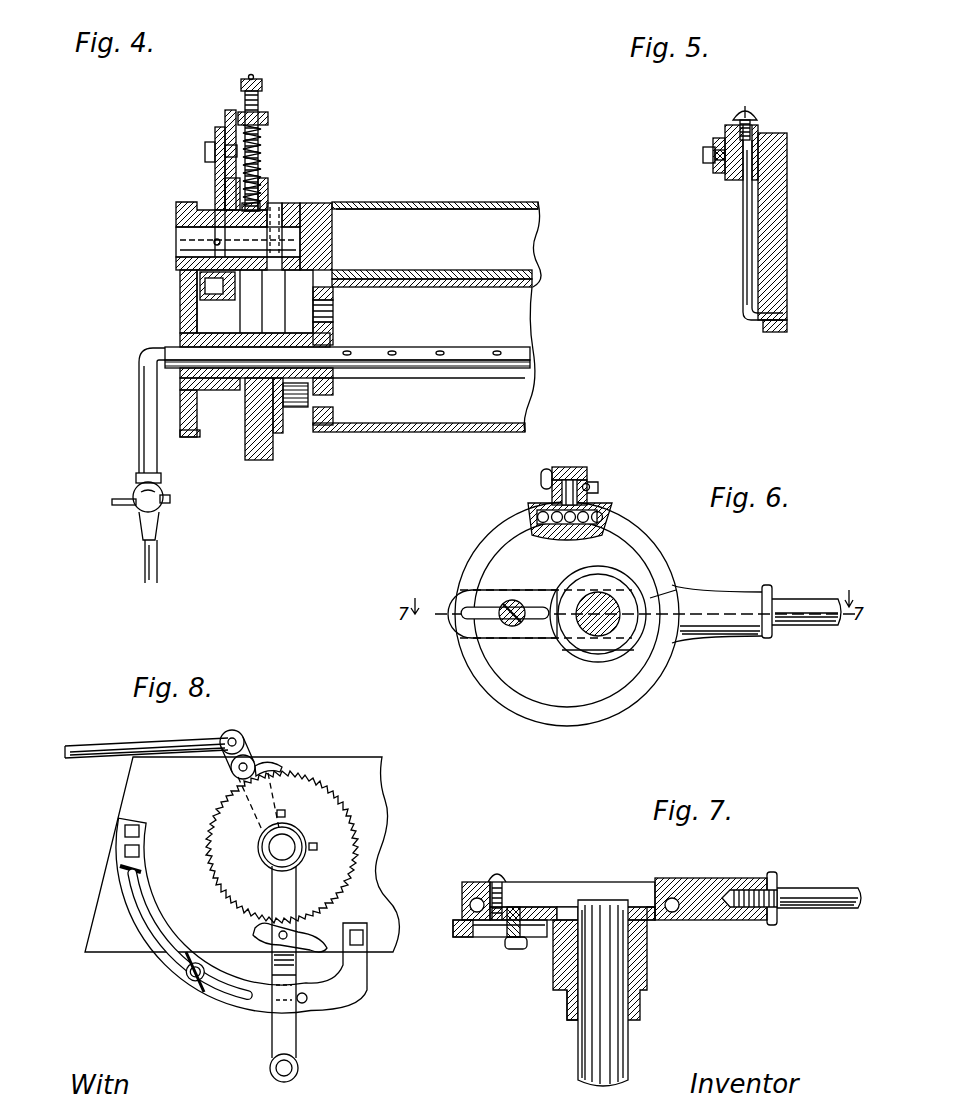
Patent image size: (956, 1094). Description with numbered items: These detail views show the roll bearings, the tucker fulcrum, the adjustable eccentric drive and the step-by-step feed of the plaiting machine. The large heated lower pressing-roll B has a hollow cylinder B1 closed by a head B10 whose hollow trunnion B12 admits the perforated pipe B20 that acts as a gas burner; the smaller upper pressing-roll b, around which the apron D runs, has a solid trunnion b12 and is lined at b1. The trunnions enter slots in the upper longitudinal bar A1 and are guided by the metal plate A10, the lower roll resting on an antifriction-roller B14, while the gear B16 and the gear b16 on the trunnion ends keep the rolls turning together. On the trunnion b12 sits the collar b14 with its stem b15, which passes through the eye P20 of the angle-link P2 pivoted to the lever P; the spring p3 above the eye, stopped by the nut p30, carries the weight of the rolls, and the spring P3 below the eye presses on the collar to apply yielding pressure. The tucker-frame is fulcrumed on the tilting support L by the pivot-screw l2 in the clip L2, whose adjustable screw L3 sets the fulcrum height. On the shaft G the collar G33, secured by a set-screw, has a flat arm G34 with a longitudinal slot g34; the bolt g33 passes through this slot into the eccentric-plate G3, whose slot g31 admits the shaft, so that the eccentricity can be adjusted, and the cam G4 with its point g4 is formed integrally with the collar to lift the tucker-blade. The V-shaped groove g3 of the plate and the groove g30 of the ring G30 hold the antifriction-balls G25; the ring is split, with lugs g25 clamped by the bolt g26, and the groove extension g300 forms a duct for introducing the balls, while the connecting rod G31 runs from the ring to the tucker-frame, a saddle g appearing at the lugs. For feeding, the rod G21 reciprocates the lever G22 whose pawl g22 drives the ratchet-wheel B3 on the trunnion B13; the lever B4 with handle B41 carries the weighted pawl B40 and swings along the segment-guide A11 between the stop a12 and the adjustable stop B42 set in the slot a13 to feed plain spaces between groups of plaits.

In FIG. 4, the stem b15 is at (252, 75).
In FIG. 4, the nut p30 is at (264, 82).
In FIG. 4, the spring p3 is at (263, 100).
In FIG. 4, the eye P20 is at (268, 116).
In FIG. 4, the spring P3 is at (262, 148).
In FIG. 4, the angle-link P2 is at (225, 118).
In FIG. 4, the lever P is at (214, 172).
In FIG. 4, the gear b16 is at (177, 213).
In FIG. 4, the collar b14 is at (276, 216).
In FIG. 4, the trunnion b12 is at (302, 215).
In FIG. 4, the apron D is at (498, 202).
In FIG. 4, the upper pressing-roll b is at (445, 191).
In FIG. 4, the drum lining b1 is at (540, 206).
In FIG. 4, the metal plate A10 is at (333, 307).
In FIG. 4, the head B10 is at (333, 330).
In FIG. 4, the perforated pipe B20 is at (467, 361).
In FIG. 4, the gear B16 is at (180, 305).
In FIG. 4, the trunnion B12 is at (180, 340).
In FIG. 4, the lower pressing-roll B is at (357, 373).
In FIG. 4, the hollow cylinder B1 is at (457, 432).
In FIG. 4, the upper longitudinal bar A1 is at (257, 460).
In FIG. 5, the upper longitudinal bar A1 is at (780, 230).
In FIG. 8, the upper longitudinal bar A1 is at (373, 770).
In FIG. 4, the antifriction-roller B14 is at (298, 407).
In FIG. 5, the adjustable screw L3 is at (750, 108).
In FIG. 5, the clip L2 is at (727, 130).
In FIG. 5, the pivot-screw l2 is at (707, 160).
In FIG. 5, the tilting support L is at (745, 238).
In FIG. 6, the eccentric-plate G3 is at (638, 663).
In FIG. 7, the eccentric-plate G3 is at (662, 920).
In FIG. 6, the collar G33 is at (600, 640).
In FIG. 7, the collar G33 is at (570, 1017).
In FIG. 6, the point of the cam g4 is at (562, 648).
In FIG. 6, the bolt g33 is at (512, 627).
In FIG. 7, the bolt g33 is at (517, 907).
In FIG. 6, the cam G4 is at (567, 582).
In FIG. 7, the cam G4 is at (555, 980).
In FIG. 6, the longitudinal slot g34 is at (487, 617).
In FIG. 7, the longitudinal slot g34 is at (490, 937).
In FIG. 6, the flat arm G34 is at (497, 632).
In FIG. 7, the flat arm G34 is at (465, 937).
In FIG. 6, the ring G30 is at (668, 667).
In FIG. 7, the ring G30 is at (690, 880).
In FIG. 6, the connecting rod G31 is at (818, 613).
In FIG. 7, the connecting rod G31 is at (833, 903).
In FIG. 6, the slot g31 is at (650, 598).
In FIG. 7, the slot g31 is at (570, 910).
In FIG. 6, the saddle g is at (548, 497).
In FIG. 6, the antifriction-balls G25 is at (597, 523).
In FIG. 7, the antifriction-balls G25 is at (677, 908).
In FIG. 6, the groove extension g300 is at (572, 468).
In FIG. 6, the lug g25 is at (585, 470).
In FIG. 6, the bolt g26 is at (598, 487).
In FIG. 8, the rod G21 is at (100, 746).
In FIG. 8, the lever G22 is at (243, 735).
In FIG. 8, the pawl g22 is at (273, 760).
In FIG. 8, the ratchet-wheel B3 is at (223, 810).
In FIG. 8, the trunnion B13 is at (290, 843).
In FIG. 8, the lever B4 is at (280, 1033).
In FIG. 8, the handle B41 is at (298, 1065).
In FIG. 8, the pawl B40 is at (267, 933).
In FIG. 8, the stop a12 is at (305, 1001).
In FIG. 8, the segment-guide A11 is at (148, 937).
In FIG. 8, the slot a13 is at (165, 933).
In FIG. 8, the adjustable stop B42 is at (190, 977).
In FIG. 7, the V-shaped groove g3 is at (507, 877).
In FIG. 7, the groove g30 is at (480, 910).
In FIG. 7, the shaft G is at (628, 1048).